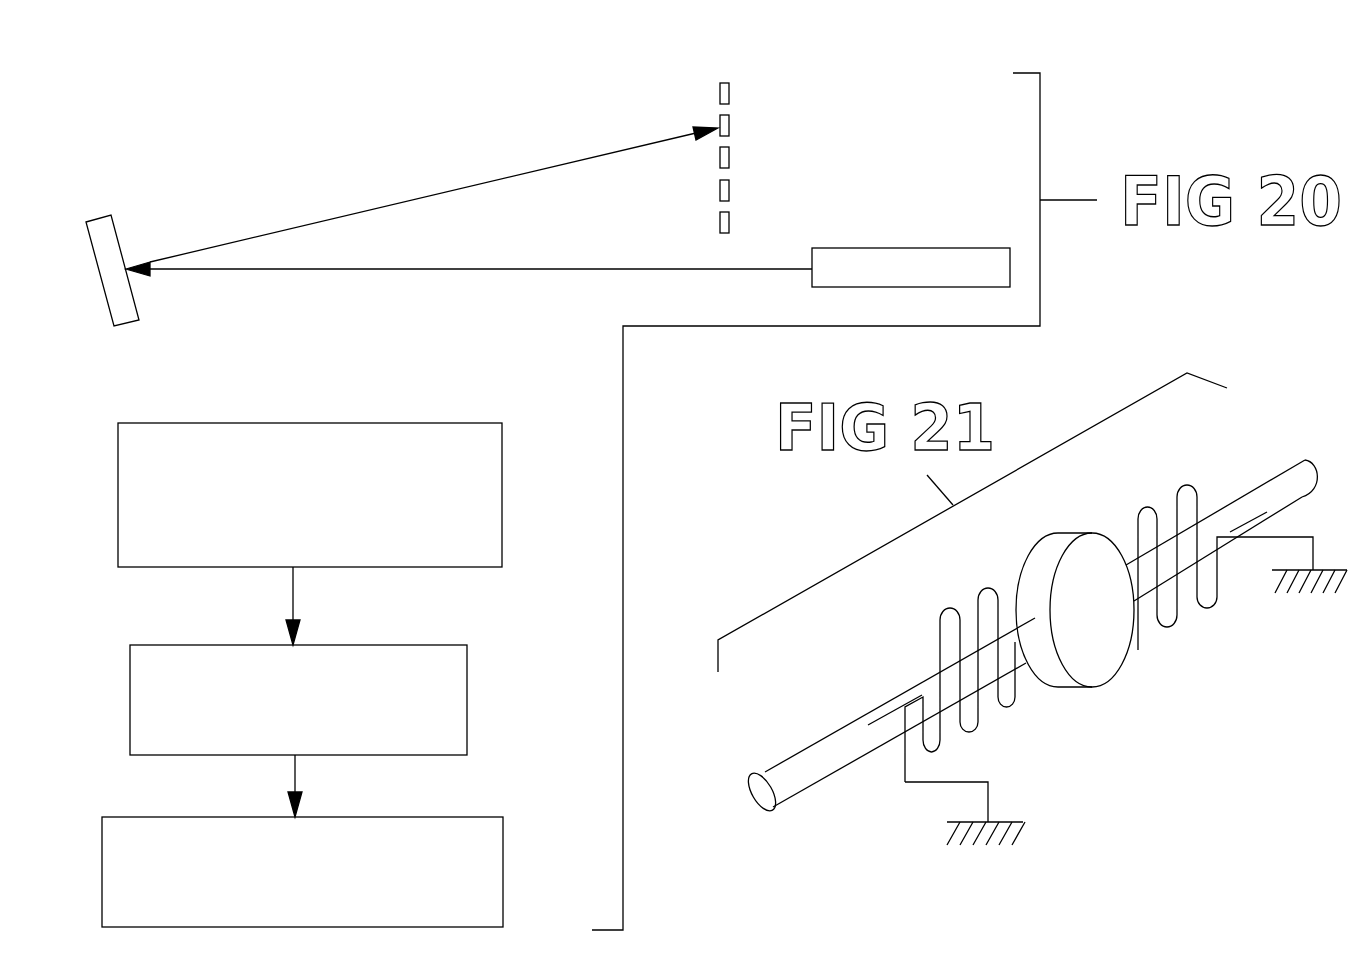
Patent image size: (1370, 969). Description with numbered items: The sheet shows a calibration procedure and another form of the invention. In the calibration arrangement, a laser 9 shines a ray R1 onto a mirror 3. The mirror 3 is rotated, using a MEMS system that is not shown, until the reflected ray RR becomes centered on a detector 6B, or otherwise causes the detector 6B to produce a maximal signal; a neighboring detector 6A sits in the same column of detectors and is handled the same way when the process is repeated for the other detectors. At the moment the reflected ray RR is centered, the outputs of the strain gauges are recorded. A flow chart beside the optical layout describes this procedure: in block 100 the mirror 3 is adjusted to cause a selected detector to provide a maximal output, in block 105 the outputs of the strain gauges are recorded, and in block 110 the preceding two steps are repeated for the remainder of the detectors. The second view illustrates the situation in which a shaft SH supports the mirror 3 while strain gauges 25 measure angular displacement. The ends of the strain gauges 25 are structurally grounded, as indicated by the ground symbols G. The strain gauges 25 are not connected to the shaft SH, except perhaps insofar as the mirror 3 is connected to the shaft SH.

In FIG. 20, the mirror 3 is at (123, 252).
In FIG. 21, the mirror 3 is at (1100, 625).
In FIG. 20, the ray R1 is at (468, 272).
In FIG. 20, the reflected ray RR is at (423, 193).
In FIG. 20, the detector 6A is at (729, 92).
In FIG. 20, the detector 6B is at (729, 130).
In FIG. 20, the laser 9 is at (908, 248).
In FIG. 20, the block 100 is at (502, 495).
In FIG. 20, the block 105 is at (467, 700).
In FIG. 20, the block 110 is at (503, 873).
In FIG. 21, the shaft SH is at (855, 717).
In FIG. 21, the strain gauges 25 is at (1036, 732).
In FIG. 21, the ground symbols G is at (1329, 642).